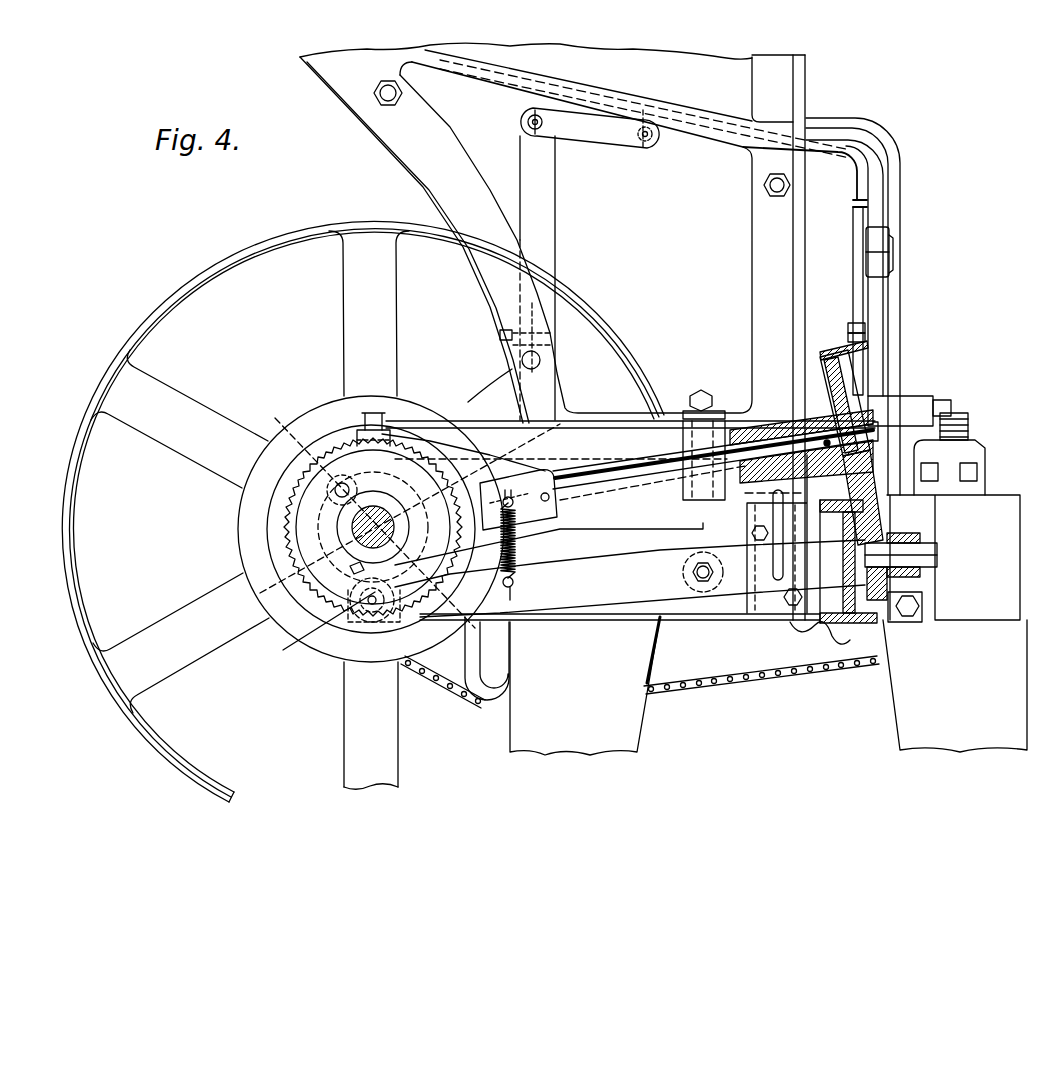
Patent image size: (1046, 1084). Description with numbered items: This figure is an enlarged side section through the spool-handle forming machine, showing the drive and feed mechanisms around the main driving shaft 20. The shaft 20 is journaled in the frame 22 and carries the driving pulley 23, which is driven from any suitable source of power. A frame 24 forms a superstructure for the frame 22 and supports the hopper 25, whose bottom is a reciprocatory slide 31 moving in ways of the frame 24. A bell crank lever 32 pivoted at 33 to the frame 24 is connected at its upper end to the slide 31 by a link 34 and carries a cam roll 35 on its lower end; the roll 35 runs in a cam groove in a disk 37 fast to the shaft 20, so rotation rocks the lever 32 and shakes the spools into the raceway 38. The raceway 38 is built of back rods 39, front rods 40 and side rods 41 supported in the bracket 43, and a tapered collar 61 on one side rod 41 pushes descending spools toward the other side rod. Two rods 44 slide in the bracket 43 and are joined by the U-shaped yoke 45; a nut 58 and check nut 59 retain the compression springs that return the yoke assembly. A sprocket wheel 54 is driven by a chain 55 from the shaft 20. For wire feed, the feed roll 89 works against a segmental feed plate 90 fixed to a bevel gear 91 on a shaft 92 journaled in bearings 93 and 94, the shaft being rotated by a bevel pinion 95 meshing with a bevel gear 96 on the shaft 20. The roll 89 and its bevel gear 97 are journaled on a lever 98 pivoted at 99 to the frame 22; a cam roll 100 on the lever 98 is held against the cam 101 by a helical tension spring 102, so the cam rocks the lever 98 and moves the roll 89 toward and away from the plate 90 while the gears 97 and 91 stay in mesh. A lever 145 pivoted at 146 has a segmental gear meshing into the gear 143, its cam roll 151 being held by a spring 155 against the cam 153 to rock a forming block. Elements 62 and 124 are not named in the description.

The main driving shaft 20 is at (356, 543).
The frame 22 is at (725, 613).
The driving pulley 23 is at (62, 530).
The frame 24 is at (428, 182).
The hopper 25 is at (713, 62).
The reciprocatory slide 31 is at (692, 118).
The bell crank lever 32 is at (558, 270).
The pivot 33 is at (542, 358).
The link 34 is at (601, 140).
The cam roll 35 is at (297, 445).
The disk 37 is at (238, 550).
The raceway 38 is at (677, 174).
The back rods 39 is at (853, 236).
The front rods 40 is at (902, 205).
The side rods 41 is at (882, 320).
The bracket 43 is at (988, 456).
The rods 44 is at (921, 393).
The yoke 45 is at (951, 404).
The sprocket wheel 54 is at (807, 630).
The chain 55 is at (640, 682).
The nut 58 is at (848, 340).
The check nut 59 is at (851, 325).
The tapered collar 61 is at (886, 243).
The channel 62 is at (865, 624).
The feed roll 89 is at (893, 597).
The segmental feed plate 90 is at (885, 503).
The bevel gear 91 is at (853, 383).
The shaft 92 is at (660, 478).
The bearing 93 is at (760, 430).
The bearing 94 is at (527, 520).
The bevel pinion 95 is at (377, 527).
The bevel gear 96 is at (433, 590).
The bevel gear 97 is at (886, 608).
The lever 98 is at (763, 600).
The pivot 99 is at (703, 583).
The cam roll 100 is at (352, 633).
The cam 101 is at (262, 594).
The helical tension spring 102 is at (520, 568).
The rod 124 is at (309, 628).
The gear 143 is at (969, 419).
The lever 145 is at (633, 423).
The pivot 146 is at (703, 400).
The cam roll 151 is at (360, 446).
The cam 153 is at (286, 508).
The spring 155 is at (523, 424).